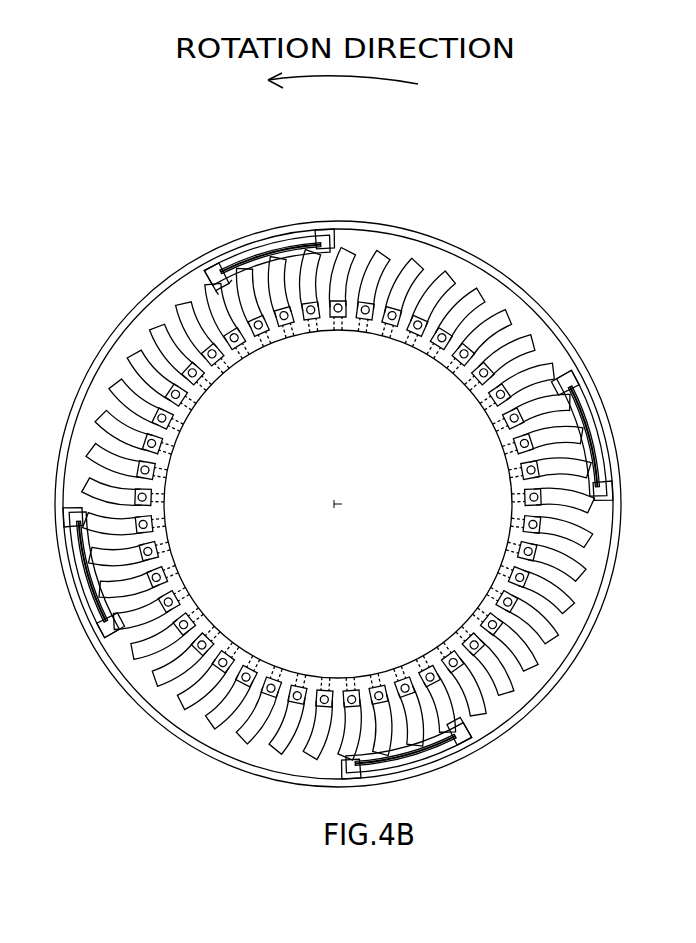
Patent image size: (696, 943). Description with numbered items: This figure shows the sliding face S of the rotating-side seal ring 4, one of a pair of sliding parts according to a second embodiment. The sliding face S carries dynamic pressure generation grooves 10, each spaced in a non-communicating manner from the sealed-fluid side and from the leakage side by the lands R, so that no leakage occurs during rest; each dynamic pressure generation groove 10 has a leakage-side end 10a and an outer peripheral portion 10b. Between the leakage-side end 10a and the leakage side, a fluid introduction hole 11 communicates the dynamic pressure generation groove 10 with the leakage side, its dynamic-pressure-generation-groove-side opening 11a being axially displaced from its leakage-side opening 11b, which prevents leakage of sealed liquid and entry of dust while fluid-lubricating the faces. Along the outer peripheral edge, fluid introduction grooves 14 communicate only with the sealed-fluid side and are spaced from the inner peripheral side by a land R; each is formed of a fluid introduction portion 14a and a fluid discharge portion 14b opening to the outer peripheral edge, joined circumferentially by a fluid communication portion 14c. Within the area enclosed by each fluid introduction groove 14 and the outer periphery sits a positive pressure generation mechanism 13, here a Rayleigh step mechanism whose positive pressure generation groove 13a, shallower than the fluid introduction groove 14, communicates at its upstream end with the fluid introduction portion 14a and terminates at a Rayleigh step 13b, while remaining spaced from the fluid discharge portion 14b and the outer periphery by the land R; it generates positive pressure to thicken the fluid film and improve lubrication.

The rotating-side seal ring 4 is at (330, 218).
The dynamic pressure generation groove 10 is at (478, 320).
The leakage-side end 10a is at (345, 335).
The outer peripheral portion 10b is at (383, 270).
The fluid introduction hole 11 is at (392, 330).
The dynamic-pressure-generation-groove-side opening 11a is at (300, 300).
The leakage-side opening 11b is at (266, 312).
The positive pressure generation mechanism 13 is at (232, 237).
The positive pressure generation groove 13a is at (250, 245).
The Rayleigh step 13b is at (310, 222).
The fluid introduction groove 14 is at (198, 268).
The fluid introduction portion 14a is at (203, 270).
The fluid discharge portion 14b is at (358, 214).
The fluid communication portion 14c is at (207, 288).
The land R is at (283, 242).
The sliding face S is at (205, 333).